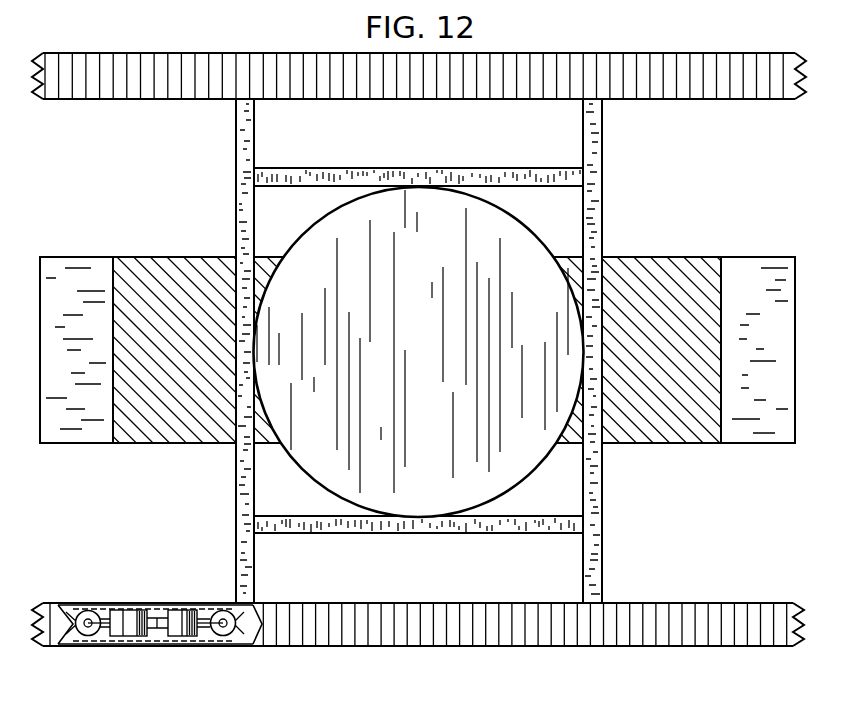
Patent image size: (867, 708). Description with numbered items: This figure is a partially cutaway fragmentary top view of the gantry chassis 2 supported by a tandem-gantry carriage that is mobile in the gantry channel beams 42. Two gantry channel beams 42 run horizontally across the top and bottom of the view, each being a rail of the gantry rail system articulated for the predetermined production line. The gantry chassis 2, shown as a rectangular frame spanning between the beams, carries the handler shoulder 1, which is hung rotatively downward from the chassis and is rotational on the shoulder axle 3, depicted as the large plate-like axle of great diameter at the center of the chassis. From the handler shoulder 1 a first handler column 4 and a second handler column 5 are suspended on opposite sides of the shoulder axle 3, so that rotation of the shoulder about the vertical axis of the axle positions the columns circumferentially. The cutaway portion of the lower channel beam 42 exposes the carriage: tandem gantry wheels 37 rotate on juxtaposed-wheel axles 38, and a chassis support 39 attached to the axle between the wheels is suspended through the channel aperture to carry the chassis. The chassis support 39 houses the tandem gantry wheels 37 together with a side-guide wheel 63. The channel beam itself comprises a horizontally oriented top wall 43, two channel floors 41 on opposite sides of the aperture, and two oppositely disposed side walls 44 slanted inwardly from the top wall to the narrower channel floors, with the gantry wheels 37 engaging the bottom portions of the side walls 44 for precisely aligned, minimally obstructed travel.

The handler shoulder 1 is at (165, 310).
The gantry chassis 2 is at (285, 170).
The shoulder axle 3 is at (485, 313).
The first handler column 4 is at (77, 293).
The second handler column 5 is at (755, 310).
The gantry channel beam 42 is at (708, 82).
The top wall 43 is at (62, 603).
The side-guide wheel 63 is at (90, 611).
The side wall 44 is at (163, 603).
The juxtaposed-wheel axle 38 is at (185, 623).
The channel floor 41 is at (108, 635).
The gantry wheel 37 is at (167, 623).
The chassis support 39 is at (205, 625).